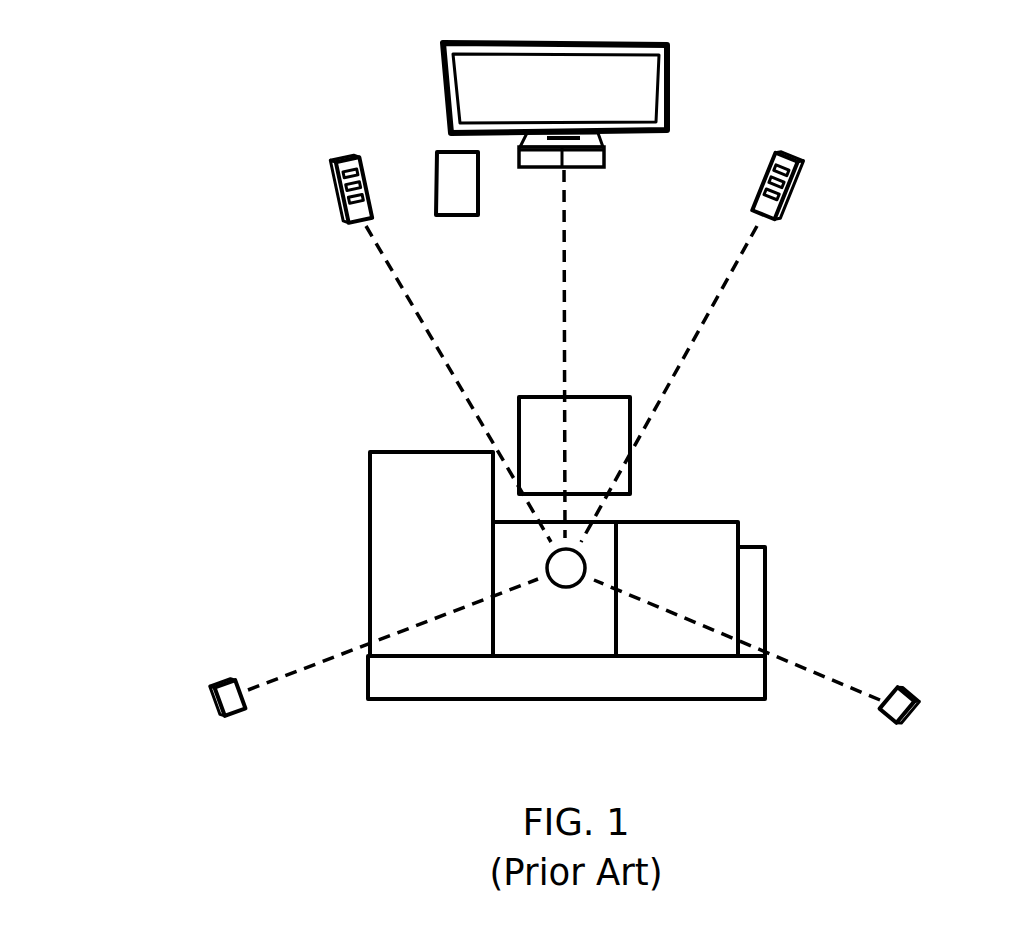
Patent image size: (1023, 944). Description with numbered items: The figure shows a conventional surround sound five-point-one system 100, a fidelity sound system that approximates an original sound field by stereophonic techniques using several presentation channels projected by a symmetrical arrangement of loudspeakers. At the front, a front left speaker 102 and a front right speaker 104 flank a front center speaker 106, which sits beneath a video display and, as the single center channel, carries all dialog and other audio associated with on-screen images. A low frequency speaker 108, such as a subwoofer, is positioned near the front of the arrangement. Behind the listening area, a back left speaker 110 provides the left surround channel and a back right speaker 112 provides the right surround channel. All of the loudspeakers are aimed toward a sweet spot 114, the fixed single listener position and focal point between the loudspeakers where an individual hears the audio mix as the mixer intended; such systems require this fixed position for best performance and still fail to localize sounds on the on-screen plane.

The surround sound 5.1 system 100 is at (797, 29).
The front left speaker 102 is at (317, 172).
The front right speaker 104 is at (813, 170).
The front center speaker 106 is at (604, 162).
The low frequency speaker 108 is at (420, 166).
The back left speaker 110 is at (194, 680).
The back right speaker 112 is at (936, 688).
The sweet spot 114 is at (585, 562).